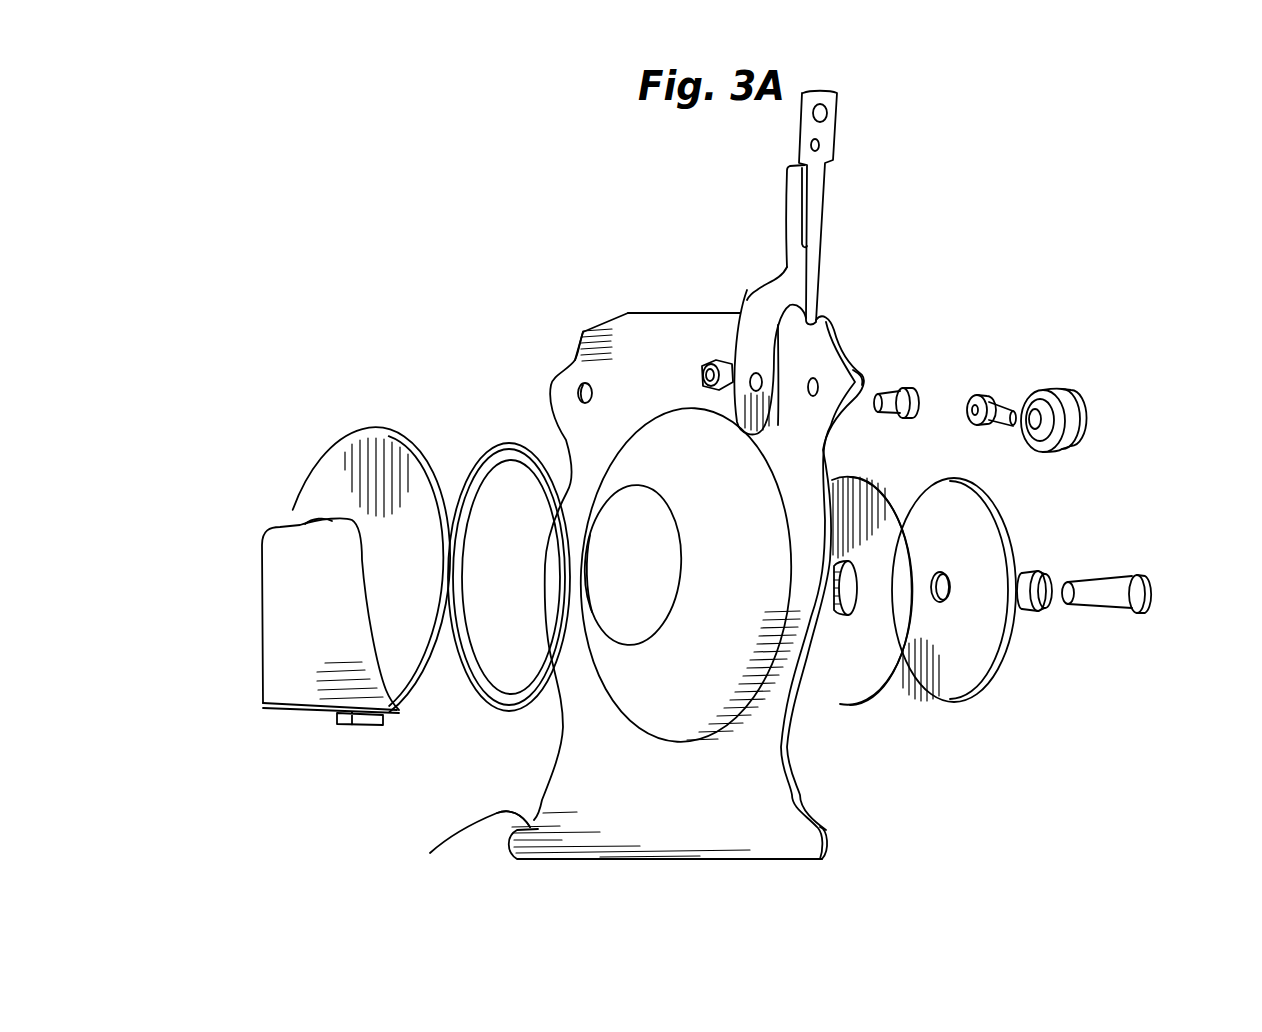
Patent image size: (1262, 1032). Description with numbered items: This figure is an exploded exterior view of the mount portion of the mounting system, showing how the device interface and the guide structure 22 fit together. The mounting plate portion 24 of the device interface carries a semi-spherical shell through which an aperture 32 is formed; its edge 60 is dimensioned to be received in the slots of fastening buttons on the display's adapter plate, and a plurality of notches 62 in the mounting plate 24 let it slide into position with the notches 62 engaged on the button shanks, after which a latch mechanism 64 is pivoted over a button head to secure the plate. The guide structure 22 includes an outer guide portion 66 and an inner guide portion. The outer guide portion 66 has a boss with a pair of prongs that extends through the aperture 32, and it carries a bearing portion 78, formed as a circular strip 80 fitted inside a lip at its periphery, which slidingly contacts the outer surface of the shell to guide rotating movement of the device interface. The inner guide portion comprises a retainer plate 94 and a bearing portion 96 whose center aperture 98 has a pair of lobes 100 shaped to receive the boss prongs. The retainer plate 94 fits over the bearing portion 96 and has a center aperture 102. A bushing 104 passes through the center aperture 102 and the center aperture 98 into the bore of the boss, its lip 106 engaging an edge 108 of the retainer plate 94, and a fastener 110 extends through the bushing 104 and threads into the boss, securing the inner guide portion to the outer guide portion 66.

The guide structure 22 is at (258, 693).
The mounting plate portion 24 is at (651, 318).
The aperture 32 is at (472, 442).
The edge 60 is at (792, 762).
The notches 62 is at (578, 365).
The latch mechanism 64 is at (812, 233).
The outer guide portion 66 is at (290, 527).
The bearing portion 78 is at (468, 708).
The circular strip 80 is at (632, 521).
The retainer plate 94 is at (997, 672).
The bearing portion 96 is at (885, 698).
The center aperture 98 is at (853, 584).
The lobes 100 is at (848, 562).
The center aperture 102 is at (933, 577).
The bushing 104 is at (1027, 574).
The lip 106 is at (1050, 580).
The edge 108 is at (948, 571).
The fastener 110 is at (1147, 574).